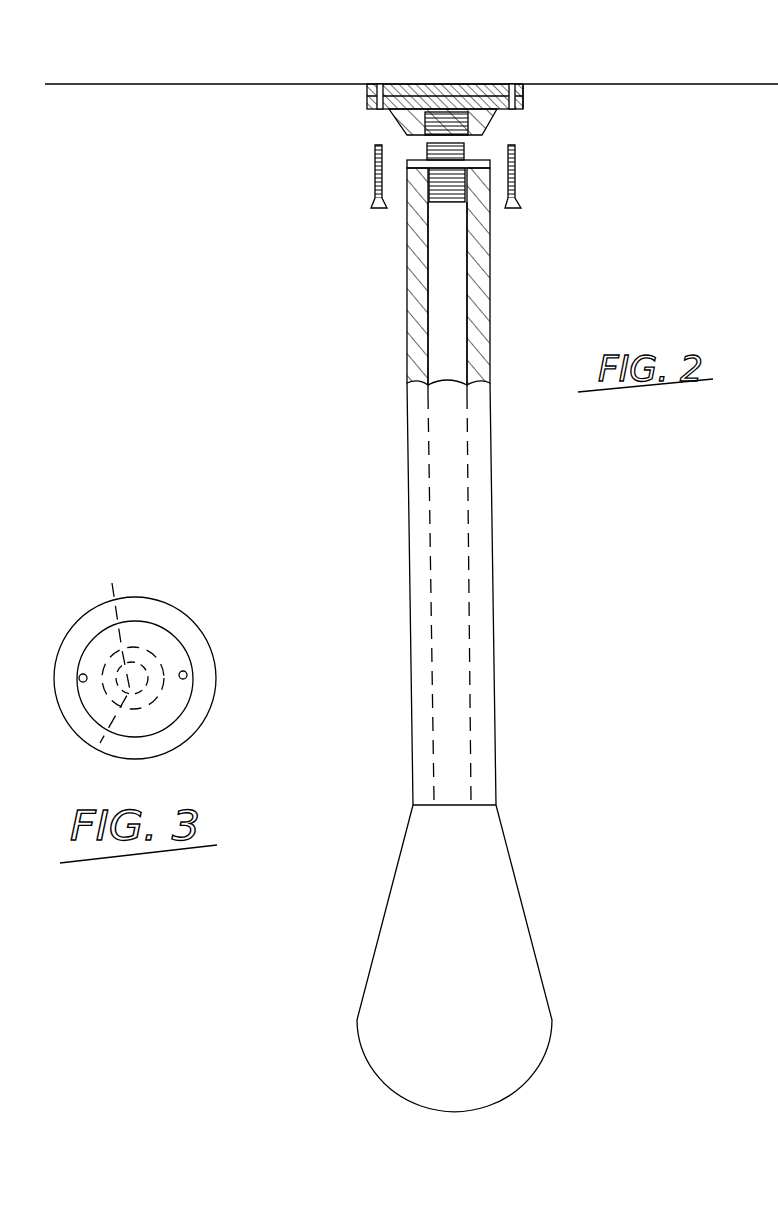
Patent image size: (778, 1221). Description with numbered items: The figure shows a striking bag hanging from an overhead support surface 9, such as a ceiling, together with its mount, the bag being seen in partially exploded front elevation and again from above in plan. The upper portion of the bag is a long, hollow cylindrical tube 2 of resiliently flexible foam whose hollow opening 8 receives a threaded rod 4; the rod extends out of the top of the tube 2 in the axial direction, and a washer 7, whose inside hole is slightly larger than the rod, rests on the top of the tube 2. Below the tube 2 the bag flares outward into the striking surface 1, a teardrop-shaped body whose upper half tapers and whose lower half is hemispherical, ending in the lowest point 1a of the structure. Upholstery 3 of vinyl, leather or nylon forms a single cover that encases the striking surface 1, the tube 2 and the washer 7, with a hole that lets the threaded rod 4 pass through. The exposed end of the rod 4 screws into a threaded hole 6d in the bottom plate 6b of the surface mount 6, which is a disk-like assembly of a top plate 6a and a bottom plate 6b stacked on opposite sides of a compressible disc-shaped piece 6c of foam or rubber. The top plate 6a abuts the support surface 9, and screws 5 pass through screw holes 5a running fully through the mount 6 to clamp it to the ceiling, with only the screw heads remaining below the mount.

In FIG. 2, the striking surface 1 is at (528, 991).
In FIG. 3, the striking surface 1 is at (186, 737).
In FIG. 2, the bottom tip of bulb 1a is at (448, 1118).
In FIG. 2, the cylindrical tube 2 is at (490, 345).
In FIG. 3, the cylindrical tube 2 is at (115, 647).
In FIG. 2, the upholstery 3 is at (482, 642).
In FIG. 2, the threaded rod 4 is at (448, 192).
In FIG. 2, the screws 5 is at (370, 180).
In FIG. 2, the plate screws 5a is at (381, 84).
In FIG. 3, the plate screws 5a is at (188, 673).
In FIG. 2, the surface mount 6 is at (437, 104).
In FIG. 3, the surface mount 6 is at (131, 657).
In FIG. 2, the top plate 6a is at (440, 84).
In FIG. 3, the top plate 6a is at (168, 646).
In FIG. 2, the bottom plate 6b is at (490, 119).
In FIG. 2, the disc-shaped piece 6c is at (523, 96).
In FIG. 2, the threaded hole 6d is at (398, 124).
In FIG. 2, the washer 7 is at (417, 166).
In FIG. 2, the hollow opening 8 is at (442, 340).
In FIG. 3, the hollow opening 8 is at (101, 737).
In FIG. 2, the support surface 9 is at (150, 89).